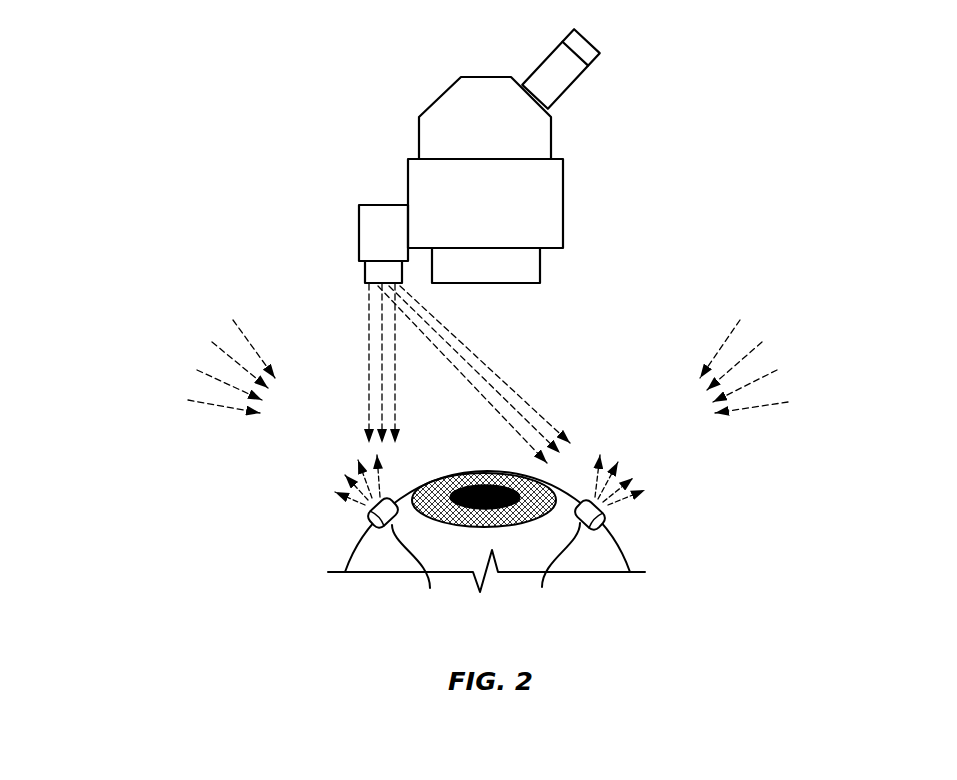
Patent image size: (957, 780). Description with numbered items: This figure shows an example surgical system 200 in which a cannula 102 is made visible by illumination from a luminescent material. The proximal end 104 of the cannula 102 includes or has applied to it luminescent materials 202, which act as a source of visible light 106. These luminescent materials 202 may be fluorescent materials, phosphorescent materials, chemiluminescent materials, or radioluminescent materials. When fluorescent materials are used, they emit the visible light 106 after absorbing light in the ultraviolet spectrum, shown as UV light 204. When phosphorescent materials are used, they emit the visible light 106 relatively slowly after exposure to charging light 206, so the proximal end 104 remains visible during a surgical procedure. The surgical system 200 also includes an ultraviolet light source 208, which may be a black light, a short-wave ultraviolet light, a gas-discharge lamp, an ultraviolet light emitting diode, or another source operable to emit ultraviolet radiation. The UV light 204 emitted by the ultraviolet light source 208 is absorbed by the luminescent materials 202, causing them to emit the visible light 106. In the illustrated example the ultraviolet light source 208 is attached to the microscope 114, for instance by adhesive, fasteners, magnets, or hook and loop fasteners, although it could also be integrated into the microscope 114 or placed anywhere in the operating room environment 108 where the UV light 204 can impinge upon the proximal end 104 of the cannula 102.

The surgical system 200 is at (750, 48).
The operating room environment 108 is at (510, 156).
The microscope 114 is at (468, 77).
The ultraviolet light source 208 is at (365, 205).
The UV light 204 is at (370, 335).
The charging light 206 is at (225, 408).
The cannula 102 is at (385, 532).
The proximal end 104 is at (370, 522).
The visible light 106 is at (347, 480).
The luminescent materials 202 is at (486, 574).